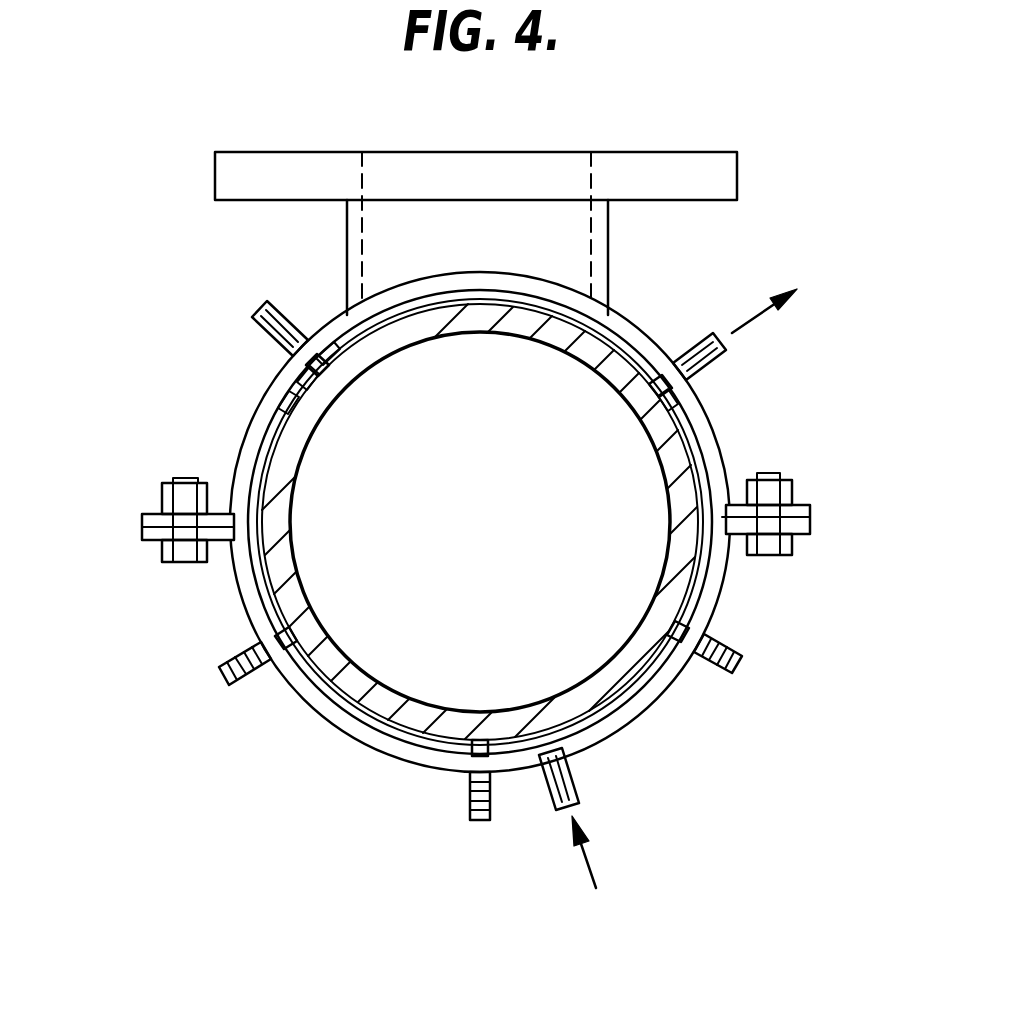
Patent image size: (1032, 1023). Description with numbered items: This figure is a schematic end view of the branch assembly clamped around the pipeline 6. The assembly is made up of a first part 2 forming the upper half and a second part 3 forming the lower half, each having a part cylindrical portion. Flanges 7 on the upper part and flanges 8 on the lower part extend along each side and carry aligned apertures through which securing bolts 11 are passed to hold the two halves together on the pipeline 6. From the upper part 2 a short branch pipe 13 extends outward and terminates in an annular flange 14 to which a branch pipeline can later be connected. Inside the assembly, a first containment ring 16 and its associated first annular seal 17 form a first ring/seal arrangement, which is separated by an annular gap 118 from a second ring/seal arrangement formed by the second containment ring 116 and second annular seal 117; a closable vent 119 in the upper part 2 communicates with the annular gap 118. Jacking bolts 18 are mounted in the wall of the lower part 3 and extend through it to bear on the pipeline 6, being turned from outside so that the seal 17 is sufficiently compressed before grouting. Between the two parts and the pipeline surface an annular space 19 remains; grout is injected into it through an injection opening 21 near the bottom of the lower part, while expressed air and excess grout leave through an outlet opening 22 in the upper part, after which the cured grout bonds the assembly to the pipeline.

The first part 2 is at (652, 340).
The second part 3 is at (716, 590).
The pipeline 6 is at (682, 575).
The flanges 7 is at (143, 514).
The flanges 8 is at (145, 529).
The securing bolts 11 is at (185, 552).
The branch pipe 13 is at (609, 255).
The annular flange 14 is at (655, 165).
The first containment ring 16 is at (529, 292).
The first annular seal 17 is at (480, 522).
The jacking bolts 18 is at (220, 673).
The annular space 19 is at (700, 448).
The injection opening 21 is at (583, 778).
The outlet opening 22 is at (712, 362).
The second containment ring 116 is at (290, 412).
The second annular seal 117 is at (660, 412).
The annular gap 118 is at (316, 382).
The closable vent 119 is at (245, 320).